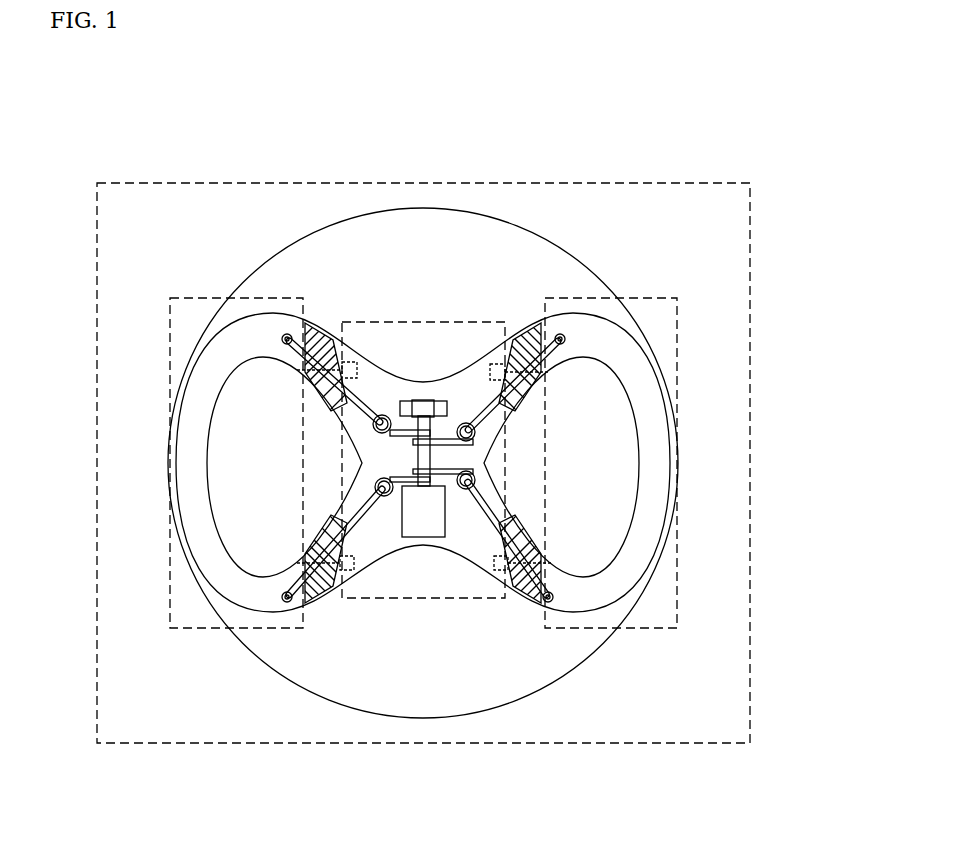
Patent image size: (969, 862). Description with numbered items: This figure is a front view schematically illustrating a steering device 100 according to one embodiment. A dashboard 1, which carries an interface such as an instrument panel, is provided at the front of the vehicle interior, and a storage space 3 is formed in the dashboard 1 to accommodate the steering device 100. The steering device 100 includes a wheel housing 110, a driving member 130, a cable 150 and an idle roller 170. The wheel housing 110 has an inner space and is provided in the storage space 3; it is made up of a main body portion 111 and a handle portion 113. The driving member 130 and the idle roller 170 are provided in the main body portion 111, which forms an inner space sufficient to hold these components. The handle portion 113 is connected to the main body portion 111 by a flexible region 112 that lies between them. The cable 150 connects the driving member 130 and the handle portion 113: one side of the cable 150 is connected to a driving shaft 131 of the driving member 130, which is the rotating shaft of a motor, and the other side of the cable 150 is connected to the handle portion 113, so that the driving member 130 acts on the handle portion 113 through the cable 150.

The dashboard 1 is at (624, 200).
The storage space 3 is at (419, 216).
The steering device 100 is at (268, 212).
The wheel housing 110 is at (660, 565).
The main body portion 111 is at (427, 320).
The flexible region 112 is at (320, 338).
The handle portion 113 is at (200, 630).
The driving member 130 is at (421, 530).
The driving shaft 131 is at (428, 458).
The cable 150 is at (356, 405).
The idle roller 170 is at (379, 413).